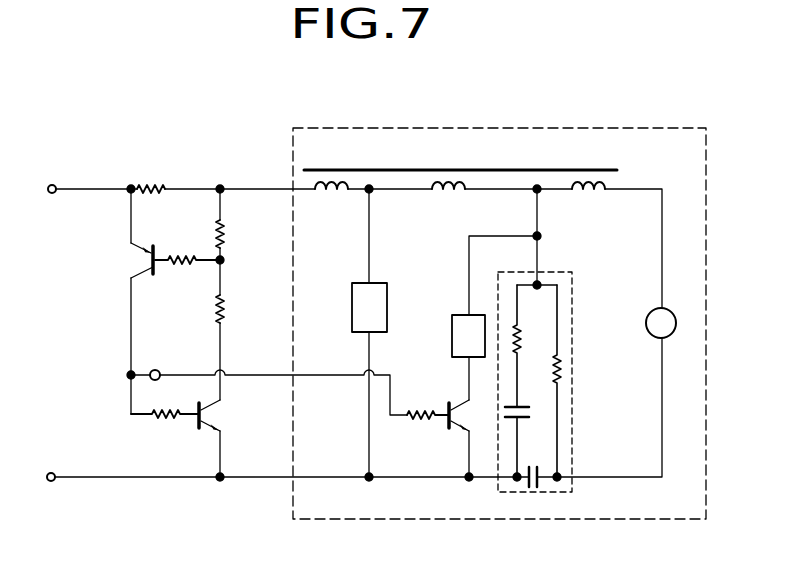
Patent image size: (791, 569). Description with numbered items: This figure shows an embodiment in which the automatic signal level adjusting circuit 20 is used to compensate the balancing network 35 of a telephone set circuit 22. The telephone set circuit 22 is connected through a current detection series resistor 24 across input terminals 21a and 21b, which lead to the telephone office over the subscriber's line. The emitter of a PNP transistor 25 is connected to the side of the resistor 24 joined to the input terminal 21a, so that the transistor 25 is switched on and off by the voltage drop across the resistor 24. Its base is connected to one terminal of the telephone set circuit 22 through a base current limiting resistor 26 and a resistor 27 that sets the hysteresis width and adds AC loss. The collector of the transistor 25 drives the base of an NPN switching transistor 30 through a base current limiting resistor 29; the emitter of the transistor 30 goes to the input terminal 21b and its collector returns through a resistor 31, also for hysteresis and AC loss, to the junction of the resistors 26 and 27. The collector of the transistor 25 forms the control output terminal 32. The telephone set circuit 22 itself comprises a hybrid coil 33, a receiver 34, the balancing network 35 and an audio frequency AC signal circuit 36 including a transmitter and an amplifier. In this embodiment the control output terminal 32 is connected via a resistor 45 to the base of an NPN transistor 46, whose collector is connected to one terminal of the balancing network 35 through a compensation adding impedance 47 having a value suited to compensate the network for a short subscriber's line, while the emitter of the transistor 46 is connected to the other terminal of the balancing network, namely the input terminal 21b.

The automatic signal level adjusting circuit 20 is at (175, 152).
The input terminal 21a is at (90, 173).
The input terminal 21b is at (279, 460).
The telephone set circuit 22 is at (343, 128).
The current detection series resistor 24 is at (151, 173).
The PNP transistor 25 is at (134, 261).
The base current limiting resistor 26 is at (187, 275).
The resistor for setting the width of hysteresis and for adding AC loss 27 is at (230, 232).
The base current limiting resistor 29 is at (164, 432).
The NPN type switching transistor 30 is at (218, 438).
The resistor for setting the width of hysteresis and for adding AC loss 31 is at (230, 311).
The control output terminal 32 is at (269, 377).
The hybrid coil 33 is at (565, 170).
The receiver 34 is at (649, 324).
The balancing network 35 is at (572, 283).
The audio frequency AC signal circuit 36 is at (369, 307).
The resistor 45 is at (427, 399).
The NPN transistor 46 is at (468, 438).
The compensation adding impedance 47 is at (468, 336).